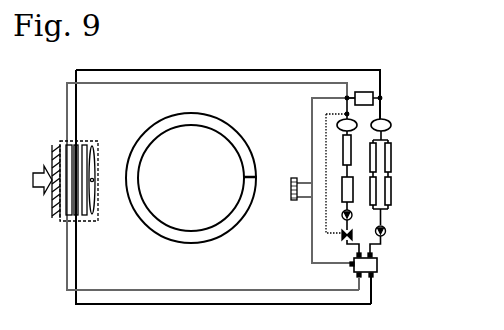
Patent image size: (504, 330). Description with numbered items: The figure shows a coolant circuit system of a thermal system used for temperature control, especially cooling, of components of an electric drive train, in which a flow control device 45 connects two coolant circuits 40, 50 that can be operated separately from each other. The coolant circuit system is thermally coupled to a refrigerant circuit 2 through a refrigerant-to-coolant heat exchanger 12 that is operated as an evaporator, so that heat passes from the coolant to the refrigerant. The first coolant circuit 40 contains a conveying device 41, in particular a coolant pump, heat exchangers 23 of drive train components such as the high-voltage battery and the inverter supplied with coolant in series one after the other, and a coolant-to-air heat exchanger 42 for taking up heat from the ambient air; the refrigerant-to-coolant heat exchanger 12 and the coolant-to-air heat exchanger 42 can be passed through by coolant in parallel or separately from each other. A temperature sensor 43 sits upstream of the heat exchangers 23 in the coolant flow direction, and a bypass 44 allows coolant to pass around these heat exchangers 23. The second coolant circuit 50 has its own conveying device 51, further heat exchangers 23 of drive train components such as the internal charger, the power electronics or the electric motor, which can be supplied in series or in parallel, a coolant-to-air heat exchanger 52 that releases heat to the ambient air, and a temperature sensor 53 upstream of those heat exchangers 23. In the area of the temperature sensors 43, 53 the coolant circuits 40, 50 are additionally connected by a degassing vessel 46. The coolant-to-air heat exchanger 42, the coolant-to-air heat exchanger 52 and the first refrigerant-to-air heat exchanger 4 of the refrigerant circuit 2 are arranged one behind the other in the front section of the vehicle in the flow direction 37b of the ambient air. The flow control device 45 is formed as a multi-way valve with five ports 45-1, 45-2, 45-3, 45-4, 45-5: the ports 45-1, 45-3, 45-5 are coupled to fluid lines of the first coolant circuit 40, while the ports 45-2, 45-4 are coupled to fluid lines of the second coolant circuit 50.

The refrigerant circuit 2 is at (132, 127).
The first refrigerant-to-air heat exchanger 4 is at (88, 217).
The refrigerant-to-coolant heat exchanger 12 is at (290, 199).
The heat exchangers of the components of the electric drive train 23 is at (342, 190).
The flow direction of the ambient air 37b is at (40, 191).
The first coolant circuit 40 is at (61, 91).
The conveying device 41 is at (341, 219).
The coolant-to-air heat exchanger 42 is at (66, 146).
The temperature sensor 43 is at (337, 123).
The bypass 44 is at (324, 208).
The flow control device 45 is at (354, 279).
The port 45-1 is at (357, 254).
The port 45-2 is at (372, 255).
The port 45-3 is at (352, 266).
The port 45-4 is at (373, 279).
The port 45-5 is at (358, 279).
The degassing vessel 46 is at (365, 92).
The second coolant circuit 50 is at (386, 79).
The conveying device 51 is at (385, 235).
The coolant-to-air heat exchanger 52 is at (75, 217).
The temperature sensor 53 is at (392, 124).